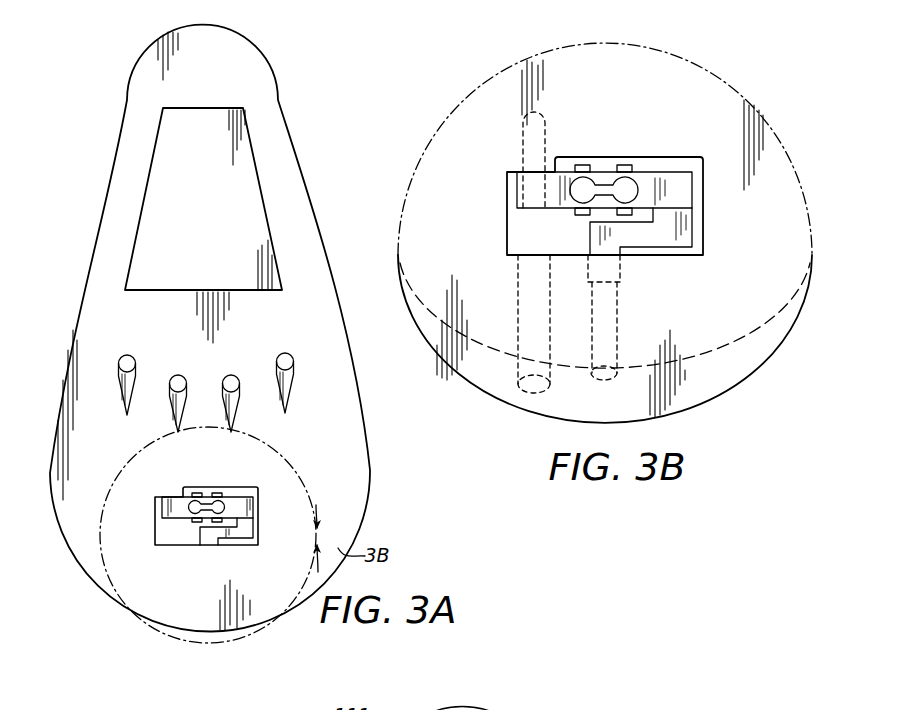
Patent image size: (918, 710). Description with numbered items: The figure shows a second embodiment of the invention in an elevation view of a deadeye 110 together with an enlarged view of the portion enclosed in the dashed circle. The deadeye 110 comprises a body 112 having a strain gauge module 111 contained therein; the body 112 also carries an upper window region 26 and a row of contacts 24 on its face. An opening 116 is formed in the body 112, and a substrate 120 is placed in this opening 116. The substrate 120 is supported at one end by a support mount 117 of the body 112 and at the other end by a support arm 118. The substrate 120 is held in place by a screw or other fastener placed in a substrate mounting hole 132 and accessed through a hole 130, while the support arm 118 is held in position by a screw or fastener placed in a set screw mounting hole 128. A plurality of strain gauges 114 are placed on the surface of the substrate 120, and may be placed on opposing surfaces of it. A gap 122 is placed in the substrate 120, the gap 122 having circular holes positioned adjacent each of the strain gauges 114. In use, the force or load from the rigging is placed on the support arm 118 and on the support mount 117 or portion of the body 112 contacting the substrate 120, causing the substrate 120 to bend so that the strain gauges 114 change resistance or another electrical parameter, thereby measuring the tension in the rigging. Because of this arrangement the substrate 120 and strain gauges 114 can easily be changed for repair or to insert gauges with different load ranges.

In FIG. 3A, the deadeye 110 is at (203, 328).
In FIG. 3A, the body 112 is at (118, 197).
In FIG. 3A, the display window 26 is at (243, 167).
In FIG. 3A, the electrical contacts 24 is at (286, 366).
In FIG. 3A, the strain gauge module 111 is at (272, 492).
In FIG. 3B, the strain gauge module 111 is at (790, 121).
In FIG. 3A, the opening 116 is at (177, 533).
In FIG. 3B, the opening 116 is at (703, 222).
In FIG. 3A, the support mount 117 is at (183, 487).
In FIG. 3B, the support mount 117 is at (556, 168).
In FIG. 3A, the substrate 120 is at (237, 506).
In FIG. 3B, the substrate 120 is at (672, 185).
In FIG. 3A, the support arm 118 is at (237, 535).
In FIG. 3B, the support arm 118 is at (653, 238).
In FIG. 3B, the strain gauges 114 is at (590, 166).
In FIG. 3B, the gap 122 is at (582, 192).
In FIG. 3B, the set screw mounting hole 128 is at (620, 340).
In FIG. 3B, the hole 130 is at (518, 313).
In FIG. 3B, the substrate mounting hole 132 is at (538, 120).